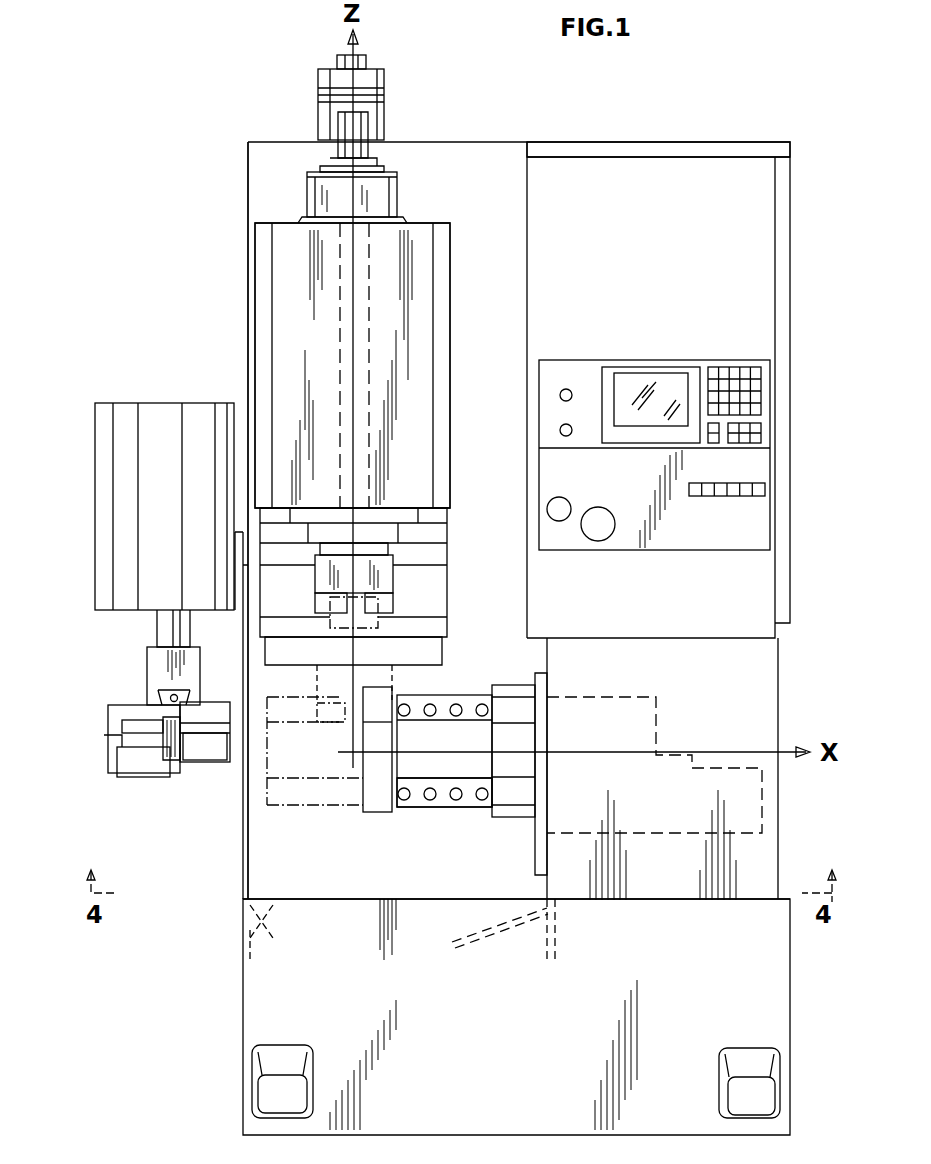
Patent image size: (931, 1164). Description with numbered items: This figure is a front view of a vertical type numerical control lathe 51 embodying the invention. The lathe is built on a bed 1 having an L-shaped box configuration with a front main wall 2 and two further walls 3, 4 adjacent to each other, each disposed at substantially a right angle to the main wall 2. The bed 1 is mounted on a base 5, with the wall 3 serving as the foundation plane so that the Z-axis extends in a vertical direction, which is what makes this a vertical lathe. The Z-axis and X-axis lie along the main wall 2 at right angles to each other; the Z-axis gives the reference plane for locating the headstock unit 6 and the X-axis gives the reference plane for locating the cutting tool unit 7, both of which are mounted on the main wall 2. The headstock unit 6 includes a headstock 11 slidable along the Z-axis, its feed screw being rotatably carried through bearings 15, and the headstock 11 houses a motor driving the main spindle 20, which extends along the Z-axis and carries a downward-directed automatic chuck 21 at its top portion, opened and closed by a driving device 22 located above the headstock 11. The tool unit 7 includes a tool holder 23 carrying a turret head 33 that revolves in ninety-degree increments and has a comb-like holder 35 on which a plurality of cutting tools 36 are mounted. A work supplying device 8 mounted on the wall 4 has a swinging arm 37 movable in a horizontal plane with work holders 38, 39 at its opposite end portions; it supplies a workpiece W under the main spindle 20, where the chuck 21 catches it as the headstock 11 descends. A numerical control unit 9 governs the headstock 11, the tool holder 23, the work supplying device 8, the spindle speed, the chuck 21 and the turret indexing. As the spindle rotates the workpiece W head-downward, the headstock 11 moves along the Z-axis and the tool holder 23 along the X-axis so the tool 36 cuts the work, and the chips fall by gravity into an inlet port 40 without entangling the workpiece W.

The bed 1 is at (465, 142).
The front main wall 2 is at (505, 152).
The wall 3 is at (430, 900).
The wall 4 is at (248, 315).
The base 5 is at (253, 996).
The headstock unit 6 is at (290, 300).
The cutting tool unit 7 is at (757, 713).
The work supplying device 8 is at (123, 400).
The numerical control unit 9 is at (750, 340).
The headstock 11 is at (440, 422).
The bearings 15 is at (318, 118).
The main spindle 20 is at (370, 346).
The automatic chuck 21 is at (392, 578).
The driving device 22 is at (386, 202).
The tool holder 23 is at (605, 694).
The turret head 33 is at (460, 730).
The comb-like holder 35 is at (445, 800).
The cutting tool 36 is at (400, 805).
The swinging arm 37 is at (130, 712).
The work holder 38 is at (215, 752).
The work holder 39 is at (142, 765).
The inlet port 40 is at (275, 915).
The lathe 51 is at (670, 138).
The workpiece W is at (330, 625).